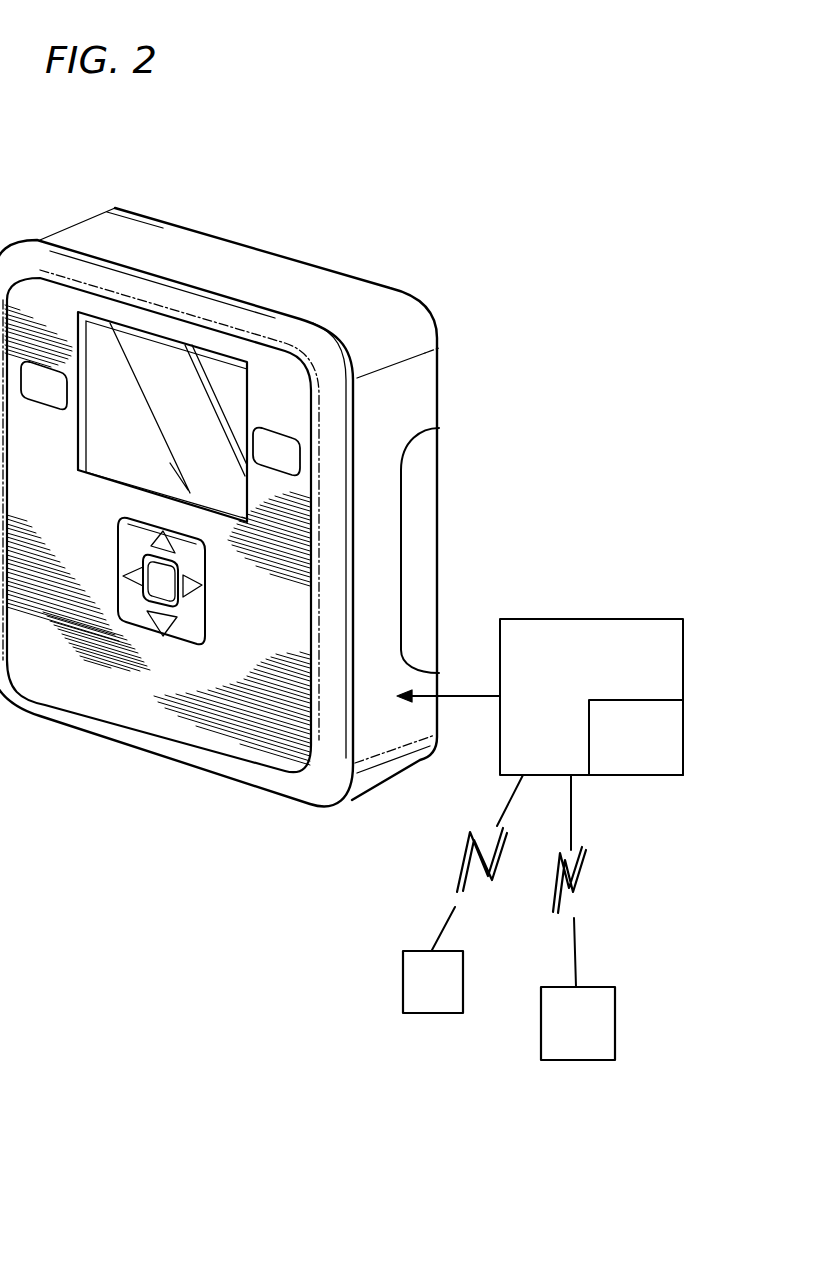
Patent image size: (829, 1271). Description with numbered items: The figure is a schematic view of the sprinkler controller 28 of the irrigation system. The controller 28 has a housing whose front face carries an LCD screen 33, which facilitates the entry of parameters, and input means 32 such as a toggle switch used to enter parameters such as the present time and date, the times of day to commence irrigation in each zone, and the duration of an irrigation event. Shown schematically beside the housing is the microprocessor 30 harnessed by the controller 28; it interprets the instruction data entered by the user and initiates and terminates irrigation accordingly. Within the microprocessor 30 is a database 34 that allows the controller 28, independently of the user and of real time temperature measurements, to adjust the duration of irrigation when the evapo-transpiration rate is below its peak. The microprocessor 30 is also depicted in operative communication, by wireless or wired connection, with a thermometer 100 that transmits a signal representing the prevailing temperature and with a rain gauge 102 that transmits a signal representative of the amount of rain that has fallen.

The sprinkler controller 28 is at (333, 203).
The microprocessor 30 is at (552, 632).
The input means 32 is at (150, 622).
The LCD screen 33 is at (168, 386).
The database 34 is at (638, 753).
The thermometer 100 is at (423, 983).
The rain gauge 102 is at (543, 1040).